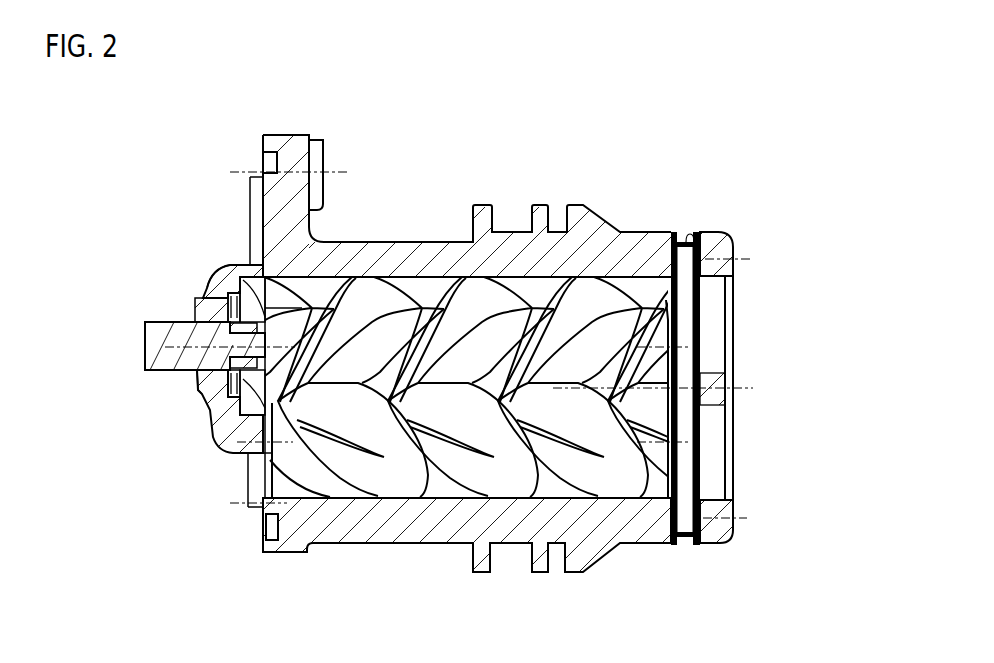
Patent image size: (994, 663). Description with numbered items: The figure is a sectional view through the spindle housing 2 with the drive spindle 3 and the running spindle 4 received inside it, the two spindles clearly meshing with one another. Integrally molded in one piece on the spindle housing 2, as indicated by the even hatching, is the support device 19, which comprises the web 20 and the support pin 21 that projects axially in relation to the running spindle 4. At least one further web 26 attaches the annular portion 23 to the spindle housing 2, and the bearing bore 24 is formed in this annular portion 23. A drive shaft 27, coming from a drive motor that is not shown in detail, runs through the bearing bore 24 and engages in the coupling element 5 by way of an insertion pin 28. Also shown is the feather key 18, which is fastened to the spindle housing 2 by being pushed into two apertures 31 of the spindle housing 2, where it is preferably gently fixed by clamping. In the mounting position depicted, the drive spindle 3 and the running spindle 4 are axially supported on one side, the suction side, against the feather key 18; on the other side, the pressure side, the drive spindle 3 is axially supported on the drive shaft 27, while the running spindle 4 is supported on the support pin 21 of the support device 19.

The spindle housing 2 is at (623, 241).
The drive spindle 3 is at (617, 332).
The running spindle 4 is at (643, 464).
The coupling element 5 is at (238, 310).
The feather key 18 is at (684, 490).
The support device 19 is at (190, 447).
The web 20 is at (215, 412).
The support pin 21 is at (243, 452).
The annular portion 23 is at (197, 312).
The bearing bore 24 is at (197, 385).
The further web 26 is at (220, 278).
The drive shaft 27 is at (153, 327).
The insertion pin 28 is at (272, 318).
The apertures 31 is at (689, 236).